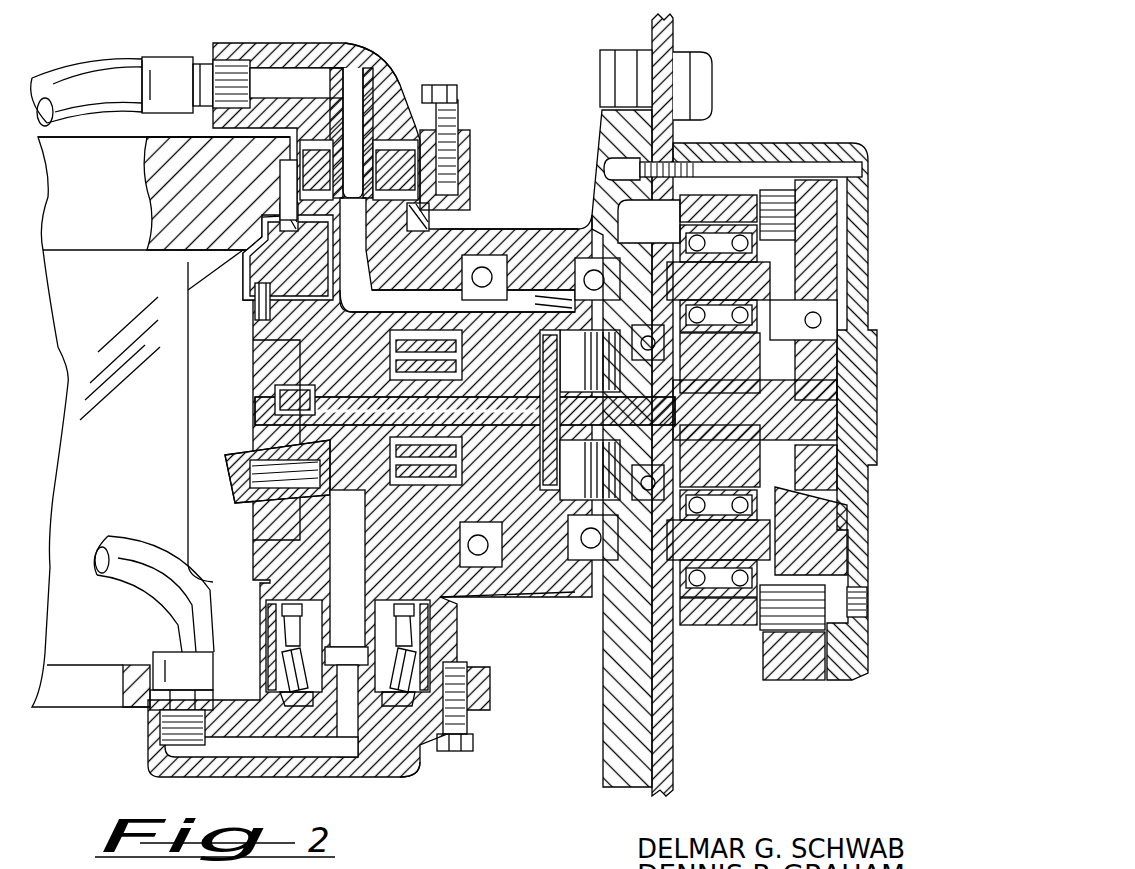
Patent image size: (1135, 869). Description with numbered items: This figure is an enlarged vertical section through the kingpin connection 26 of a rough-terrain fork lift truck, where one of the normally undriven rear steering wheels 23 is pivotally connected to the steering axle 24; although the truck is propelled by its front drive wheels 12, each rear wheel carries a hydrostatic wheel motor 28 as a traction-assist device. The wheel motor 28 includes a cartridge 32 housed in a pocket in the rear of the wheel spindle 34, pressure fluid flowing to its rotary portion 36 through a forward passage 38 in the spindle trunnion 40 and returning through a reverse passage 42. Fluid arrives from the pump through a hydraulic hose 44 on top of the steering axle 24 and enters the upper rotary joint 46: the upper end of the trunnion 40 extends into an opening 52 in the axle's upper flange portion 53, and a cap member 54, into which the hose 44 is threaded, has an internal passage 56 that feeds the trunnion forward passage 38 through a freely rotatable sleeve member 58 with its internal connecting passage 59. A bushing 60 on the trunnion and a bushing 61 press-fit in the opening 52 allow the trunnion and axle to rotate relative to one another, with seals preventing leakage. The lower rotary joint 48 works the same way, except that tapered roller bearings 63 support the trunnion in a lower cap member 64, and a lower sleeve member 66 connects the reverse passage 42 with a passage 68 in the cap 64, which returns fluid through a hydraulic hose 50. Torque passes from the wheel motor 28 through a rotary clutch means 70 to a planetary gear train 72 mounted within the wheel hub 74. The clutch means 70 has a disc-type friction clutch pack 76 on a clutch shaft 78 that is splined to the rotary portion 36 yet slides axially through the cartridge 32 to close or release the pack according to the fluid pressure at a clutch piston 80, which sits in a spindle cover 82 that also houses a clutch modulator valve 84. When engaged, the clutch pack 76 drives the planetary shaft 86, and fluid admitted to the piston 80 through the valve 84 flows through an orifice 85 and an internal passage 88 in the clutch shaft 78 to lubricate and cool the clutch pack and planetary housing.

The front drive wheels 12 is at (168, 56).
The rear steering wheels 23 is at (790, 62).
The steering axle 24 is at (102, 716).
The kingpin connection 26 is at (410, 83).
The wheel motor 28 is at (370, 318).
The cartridge 32 is at (512, 330).
The wheel spindle 34 is at (537, 268).
The rotary portion 36 is at (442, 372).
The forward passage 38 is at (336, 275).
The spindle trunnion 40 is at (262, 262).
The reverse passage 42 is at (300, 566).
The hydraulic hose 44 is at (85, 62).
The rotary joint 46 is at (280, 172).
The lower rotary joint 48 is at (363, 737).
The hydraulic hose 50 is at (118, 618).
The opening 52 is at (313, 133).
The upper flange portion 53 is at (175, 136).
The cap member 54 is at (338, 45).
The internal passage 56 is at (291, 70).
The sleeve member 58 is at (380, 55).
The internal connecting passage 59 is at (362, 170).
The bushing 60 is at (398, 192).
The bushing 61 is at (418, 185).
The tapered roller bearings 63 is at (435, 662).
The lower cap member 64 is at (400, 755).
The lower sleeve member 66 is at (332, 760).
The passage 68 is at (246, 760).
The rotary clutch means 70 is at (554, 480).
The planetary gear train 72 is at (771, 224).
The wheel hub 74 is at (872, 230).
The friction clutch pack 76 is at (585, 480).
The clutch shaft 78 is at (440, 445).
The clutch piston 80 is at (270, 420).
The spindle cover 82 is at (252, 338).
The clutch modulator valve 84 is at (228, 472).
The orifice 85 is at (278, 398).
The planetary shaft 86 is at (715, 440).
The internal passage 88 is at (362, 420).